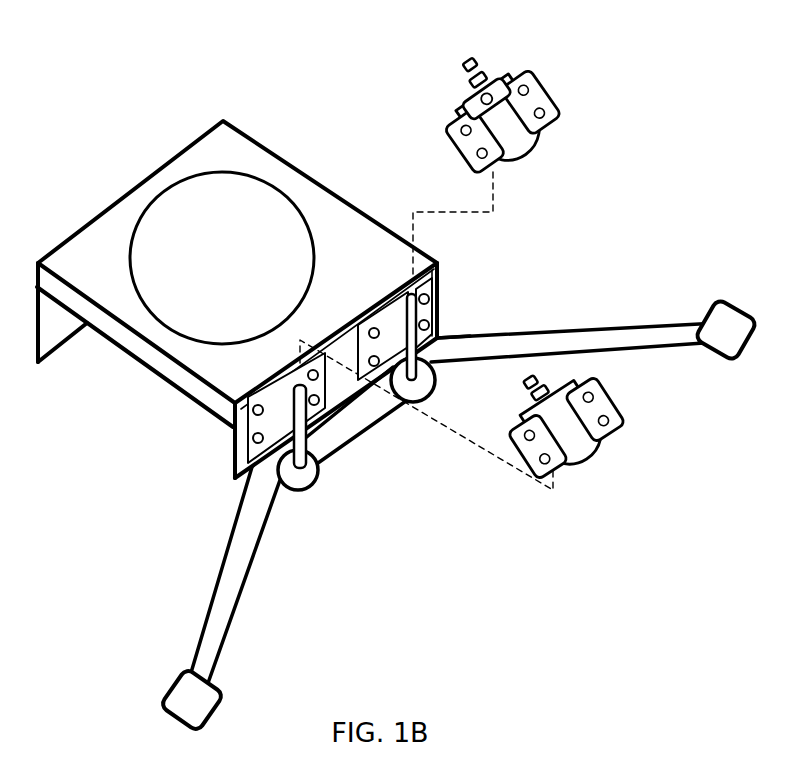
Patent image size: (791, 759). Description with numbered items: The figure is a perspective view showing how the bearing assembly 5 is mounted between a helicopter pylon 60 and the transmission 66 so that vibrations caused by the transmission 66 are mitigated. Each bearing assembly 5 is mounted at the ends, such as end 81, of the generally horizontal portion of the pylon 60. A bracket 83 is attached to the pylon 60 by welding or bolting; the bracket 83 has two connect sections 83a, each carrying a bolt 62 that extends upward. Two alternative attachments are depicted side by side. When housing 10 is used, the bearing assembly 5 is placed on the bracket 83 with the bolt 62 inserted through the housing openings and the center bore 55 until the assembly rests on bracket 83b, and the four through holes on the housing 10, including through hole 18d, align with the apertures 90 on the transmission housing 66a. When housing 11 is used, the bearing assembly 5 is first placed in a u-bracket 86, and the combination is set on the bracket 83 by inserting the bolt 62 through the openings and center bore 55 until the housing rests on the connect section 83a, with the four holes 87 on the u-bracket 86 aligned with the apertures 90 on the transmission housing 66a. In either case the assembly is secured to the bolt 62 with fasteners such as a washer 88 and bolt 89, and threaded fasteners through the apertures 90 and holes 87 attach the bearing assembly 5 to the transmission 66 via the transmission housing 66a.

The bearing assembly 5 is at (500, 90).
The housing 10 is at (593, 448).
The housing 11 is at (510, 110).
The through hole 18d is at (607, 421).
The center bore 55 is at (478, 97).
The pylon 60 is at (580, 345).
The bolt 62 is at (435, 341).
The transmission 66 is at (188, 243).
The transmission housing 66a is at (177, 370).
The end of horizontal portion of pylon 81 is at (443, 363).
The bracket 83 is at (387, 407).
The connect section 83a is at (431, 397).
The bracket 83b is at (309, 490).
The u-bracket 86 is at (530, 142).
The hole 87 is at (520, 85).
The washer 88 is at (467, 82).
The bolt 89 is at (462, 60).
The aperture 90 is at (237, 458).